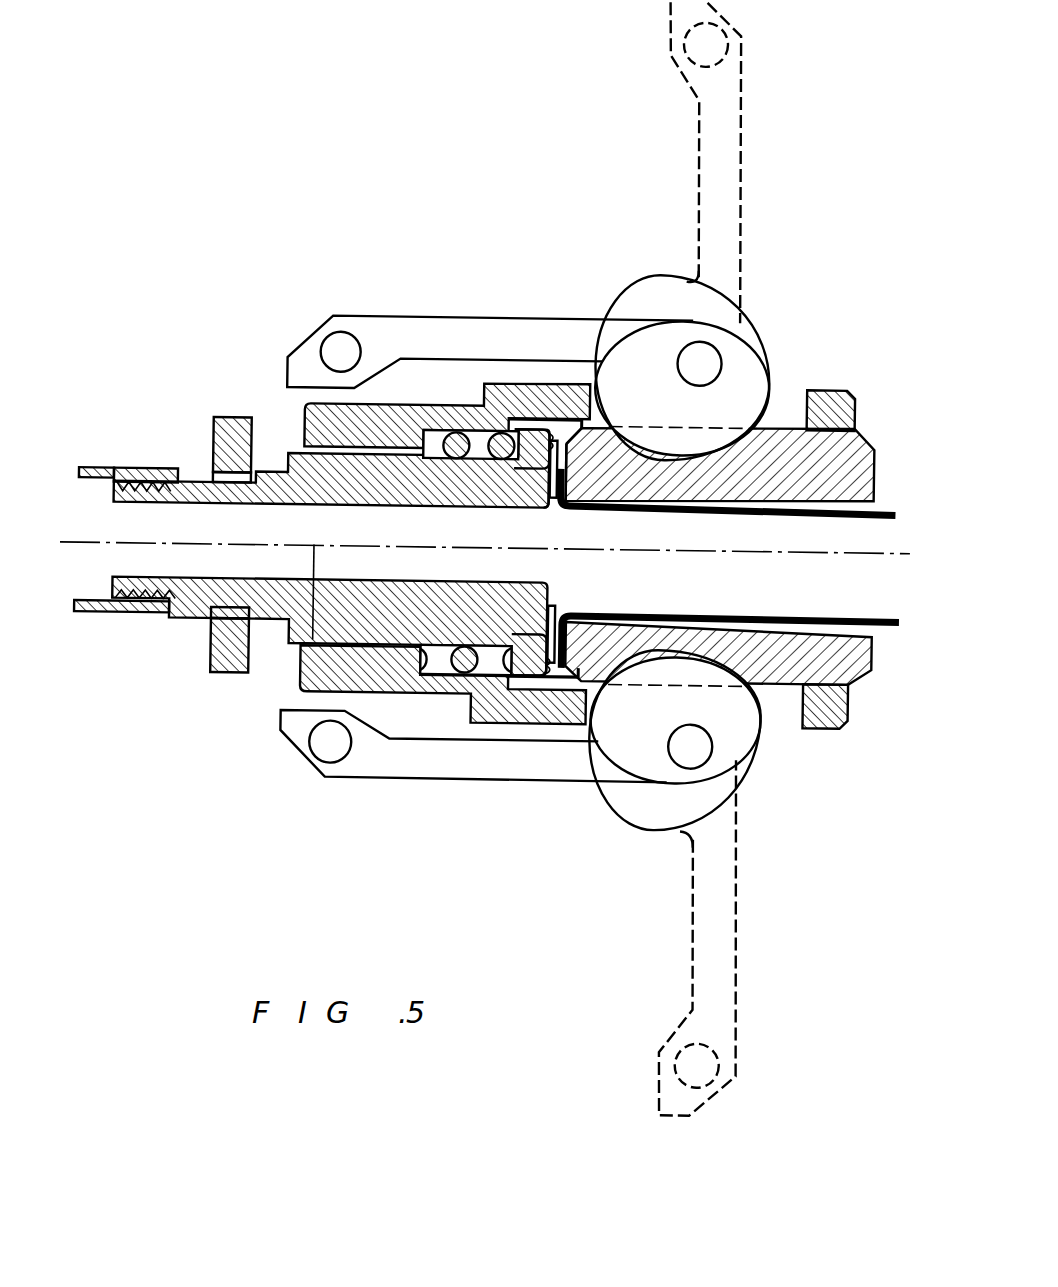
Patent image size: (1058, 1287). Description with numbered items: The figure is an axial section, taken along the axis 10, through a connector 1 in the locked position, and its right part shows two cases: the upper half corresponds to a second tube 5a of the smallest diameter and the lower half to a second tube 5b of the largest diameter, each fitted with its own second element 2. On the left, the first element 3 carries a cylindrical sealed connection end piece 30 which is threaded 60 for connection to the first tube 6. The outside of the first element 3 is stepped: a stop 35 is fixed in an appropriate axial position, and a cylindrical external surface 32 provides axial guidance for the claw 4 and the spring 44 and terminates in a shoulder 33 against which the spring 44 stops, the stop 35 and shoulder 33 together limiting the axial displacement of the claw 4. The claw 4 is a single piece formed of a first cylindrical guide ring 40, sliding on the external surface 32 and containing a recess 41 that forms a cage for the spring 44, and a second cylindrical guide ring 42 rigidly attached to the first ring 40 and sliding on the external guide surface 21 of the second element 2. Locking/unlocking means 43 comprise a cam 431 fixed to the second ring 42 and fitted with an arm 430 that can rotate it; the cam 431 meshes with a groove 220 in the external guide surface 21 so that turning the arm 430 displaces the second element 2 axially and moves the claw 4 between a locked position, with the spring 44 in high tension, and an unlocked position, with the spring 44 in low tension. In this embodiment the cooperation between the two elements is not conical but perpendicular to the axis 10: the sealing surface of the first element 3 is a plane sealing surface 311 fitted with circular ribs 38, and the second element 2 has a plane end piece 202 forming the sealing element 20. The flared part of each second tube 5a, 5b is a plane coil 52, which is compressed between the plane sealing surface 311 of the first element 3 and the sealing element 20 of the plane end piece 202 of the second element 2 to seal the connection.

The connector 1 is at (312, 782).
The second element 2 is at (731, 437).
The first element 3 is at (331, 491).
The claw 4 is at (408, 546).
The second tube 5a is at (776, 516).
The second tube 5b is at (865, 611).
The first tube 6 is at (155, 484).
The axis 10 is at (141, 548).
The sealing element 20 is at (566, 462).
The external guide surface 21 is at (718, 681).
The cylindrical sealed connection end piece 30 is at (126, 543).
The cylindrical external surface 32 is at (311, 575).
The shoulder 33 is at (544, 431).
The stop 35 is at (225, 674).
The circular ribs 38 is at (543, 603).
The first cylindrical guide ring 40 is at (309, 427).
The recess 41 is at (471, 639).
The second cylindrical guide ring 42 is at (825, 389).
The locking/unlocking means 43 is at (684, 547).
The spring 44 is at (466, 676).
The plane coil 52 is at (572, 554).
The thread 60 is at (167, 620).
The plane end piece 202 is at (583, 516).
The groove 220 is at (763, 667).
The plane sealing surface 311 is at (546, 457).
The arm 430 is at (468, 318).
The cam 431 is at (765, 365).